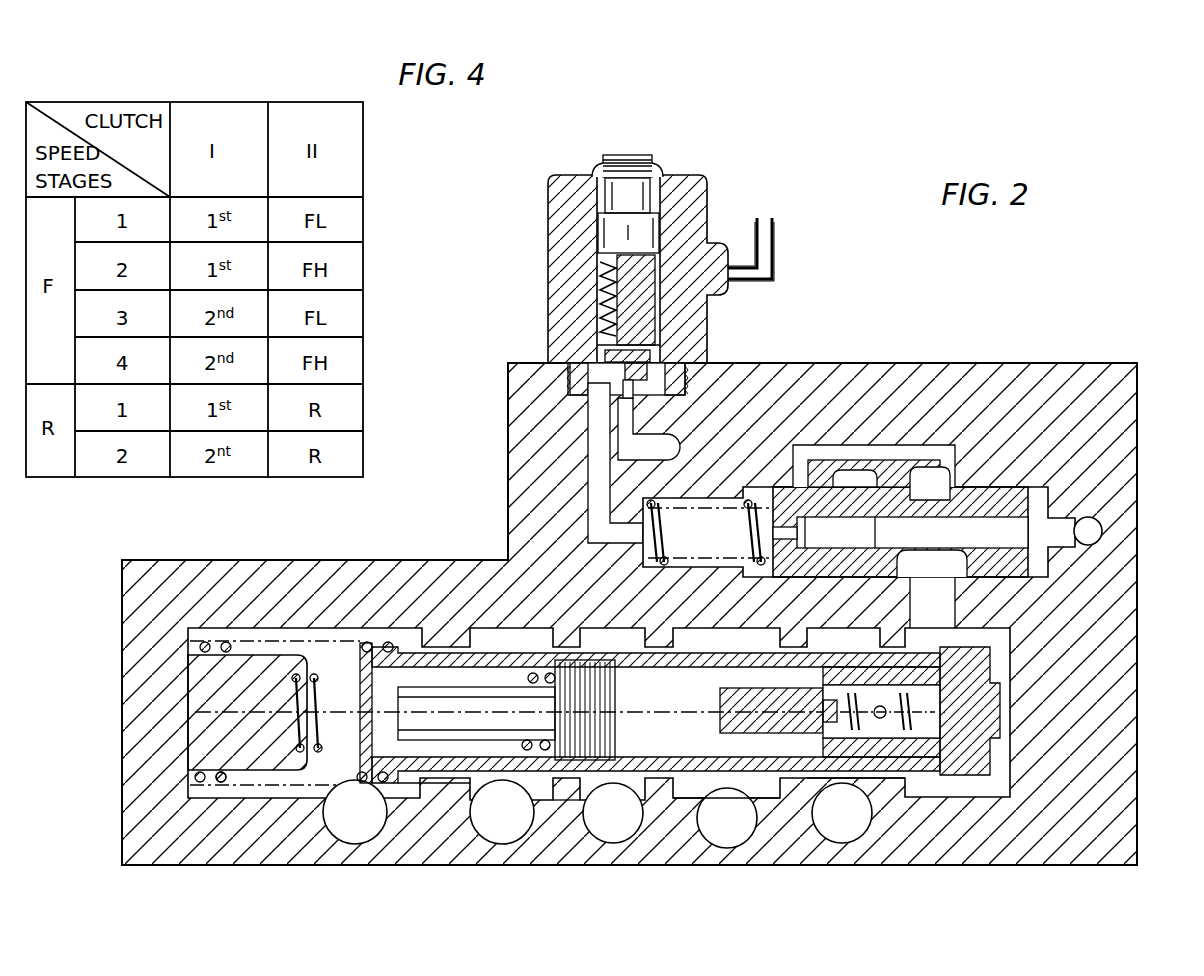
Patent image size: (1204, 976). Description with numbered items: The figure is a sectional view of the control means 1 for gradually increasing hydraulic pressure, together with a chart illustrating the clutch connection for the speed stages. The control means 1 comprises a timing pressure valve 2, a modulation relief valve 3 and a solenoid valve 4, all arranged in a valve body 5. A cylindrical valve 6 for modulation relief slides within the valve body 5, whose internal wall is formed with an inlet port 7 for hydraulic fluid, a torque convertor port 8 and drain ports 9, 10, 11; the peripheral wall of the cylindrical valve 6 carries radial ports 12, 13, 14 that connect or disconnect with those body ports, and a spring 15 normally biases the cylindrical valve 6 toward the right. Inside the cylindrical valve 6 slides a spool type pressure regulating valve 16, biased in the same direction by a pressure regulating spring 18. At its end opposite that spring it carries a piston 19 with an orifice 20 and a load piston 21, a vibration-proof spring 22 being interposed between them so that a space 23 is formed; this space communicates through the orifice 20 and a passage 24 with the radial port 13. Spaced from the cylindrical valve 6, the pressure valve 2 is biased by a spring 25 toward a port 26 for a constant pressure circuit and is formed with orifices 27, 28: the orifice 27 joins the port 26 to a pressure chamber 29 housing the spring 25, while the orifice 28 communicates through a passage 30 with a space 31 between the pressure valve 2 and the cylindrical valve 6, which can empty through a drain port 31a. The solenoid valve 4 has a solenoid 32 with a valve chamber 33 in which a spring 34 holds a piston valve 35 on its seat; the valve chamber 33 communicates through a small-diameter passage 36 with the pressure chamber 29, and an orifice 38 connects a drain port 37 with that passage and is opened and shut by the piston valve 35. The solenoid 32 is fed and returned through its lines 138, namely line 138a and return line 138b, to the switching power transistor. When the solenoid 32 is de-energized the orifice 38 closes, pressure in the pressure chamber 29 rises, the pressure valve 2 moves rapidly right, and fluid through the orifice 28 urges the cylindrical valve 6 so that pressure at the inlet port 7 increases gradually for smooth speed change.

The control means 1 is at (1025, 363).
The timing pressure valve 2 is at (900, 532).
The modulation relief valve 3 is at (597, 642).
The solenoid valve 4 is at (625, 266).
The valve body 5 is at (1110, 835).
The cylindrical valve 6 is at (438, 782).
The inlet port 7 is at (731, 848).
The torque convertor port 8 is at (508, 820).
The drain port 9 is at (360, 820).
The drain port 10 is at (612, 843).
The drain port 11 is at (836, 843).
The radial port 12 is at (613, 813).
The radial port 13 is at (727, 818).
The radial port 14 is at (893, 782).
The spring 15 is at (219, 780).
The pressure regulating valve 16 is at (622, 711).
The pressure regulating spring 18 is at (492, 688).
The piston 19 is at (842, 813).
The orifice 20 is at (825, 712).
The load piston 21 is at (935, 717).
The vibration-proof spring 22 is at (930, 705).
The space 23 is at (925, 735).
The passage 24 is at (740, 693).
The spring 25 is at (685, 505).
The port 26 is at (1102, 531).
The orifice 27 is at (790, 531).
The orifice 28 is at (825, 518).
The pressure chamber 29 is at (686, 543).
The passage 30 is at (912, 492).
The space 31 is at (913, 616).
The drain port 31a is at (872, 510).
The solenoid 32 is at (548, 207).
The valve chamber 33 is at (600, 365).
The spring 34 is at (600, 318).
The piston valve 35 is at (640, 320).
The small-diameter passage 36 is at (596, 490).
The drain port 37 is at (660, 430).
The orifice 38 is at (668, 355).
The solenoid lines 138 is at (775, 212).
The line 138a is at (780, 246).
The return line 138b is at (755, 250).